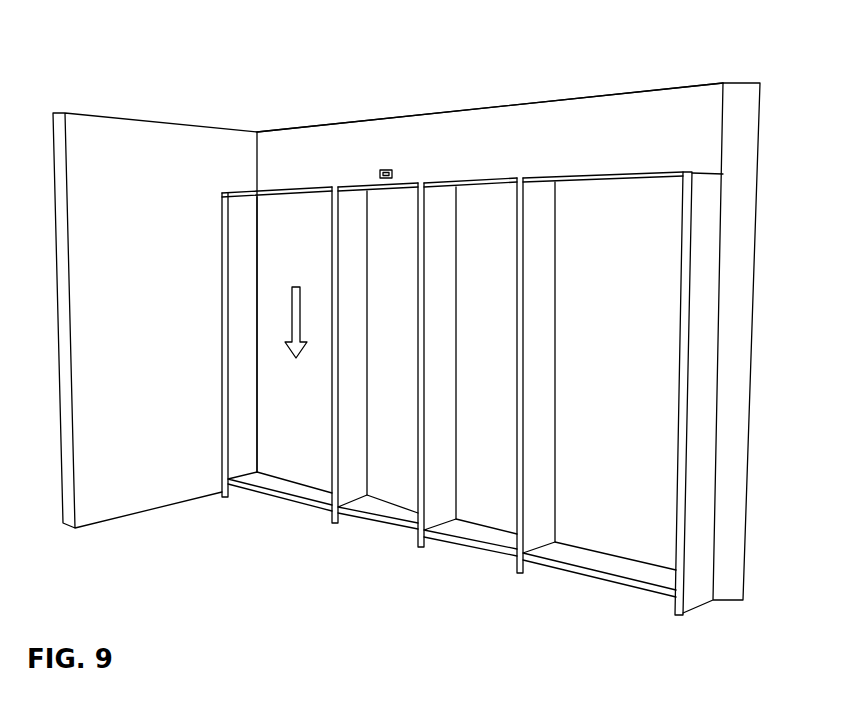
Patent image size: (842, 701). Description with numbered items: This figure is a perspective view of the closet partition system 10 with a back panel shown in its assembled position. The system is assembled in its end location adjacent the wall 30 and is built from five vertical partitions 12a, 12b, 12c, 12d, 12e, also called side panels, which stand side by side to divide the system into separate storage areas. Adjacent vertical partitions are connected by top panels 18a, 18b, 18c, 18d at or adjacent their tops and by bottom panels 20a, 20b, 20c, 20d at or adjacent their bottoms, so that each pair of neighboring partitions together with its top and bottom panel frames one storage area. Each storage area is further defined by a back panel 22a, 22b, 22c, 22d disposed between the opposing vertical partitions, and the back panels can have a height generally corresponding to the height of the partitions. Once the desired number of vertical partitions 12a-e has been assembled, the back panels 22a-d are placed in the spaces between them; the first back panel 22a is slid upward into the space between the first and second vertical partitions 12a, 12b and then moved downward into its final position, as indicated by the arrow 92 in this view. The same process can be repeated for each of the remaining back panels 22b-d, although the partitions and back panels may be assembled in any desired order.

The closet partition system 10 is at (430, 98).
The wall 30 is at (655, 112).
The first vertical partition 12a is at (222, 212).
The second vertical partition 12b is at (353, 212).
The third vertical partition 12c is at (443, 203).
The fourth vertical partition 12d is at (560, 158).
The fifth vertical partition 12e is at (705, 207).
The first top panel 18a is at (272, 190).
The second top panel 18b is at (405, 182).
The third top panel 18c is at (497, 178).
The fourth top panel 18d is at (660, 172).
The first bottom panel 20a is at (267, 495).
The second bottom panel 20b is at (360, 520).
The third bottom panel 20c is at (457, 518).
The fourth bottom panel 20d is at (578, 573).
The first back panel 22a is at (303, 215).
The second back panel 22b is at (402, 483).
The third back panel 22c is at (495, 503).
The fourth back panel 22d is at (618, 525).
The arrow 92 is at (297, 320).